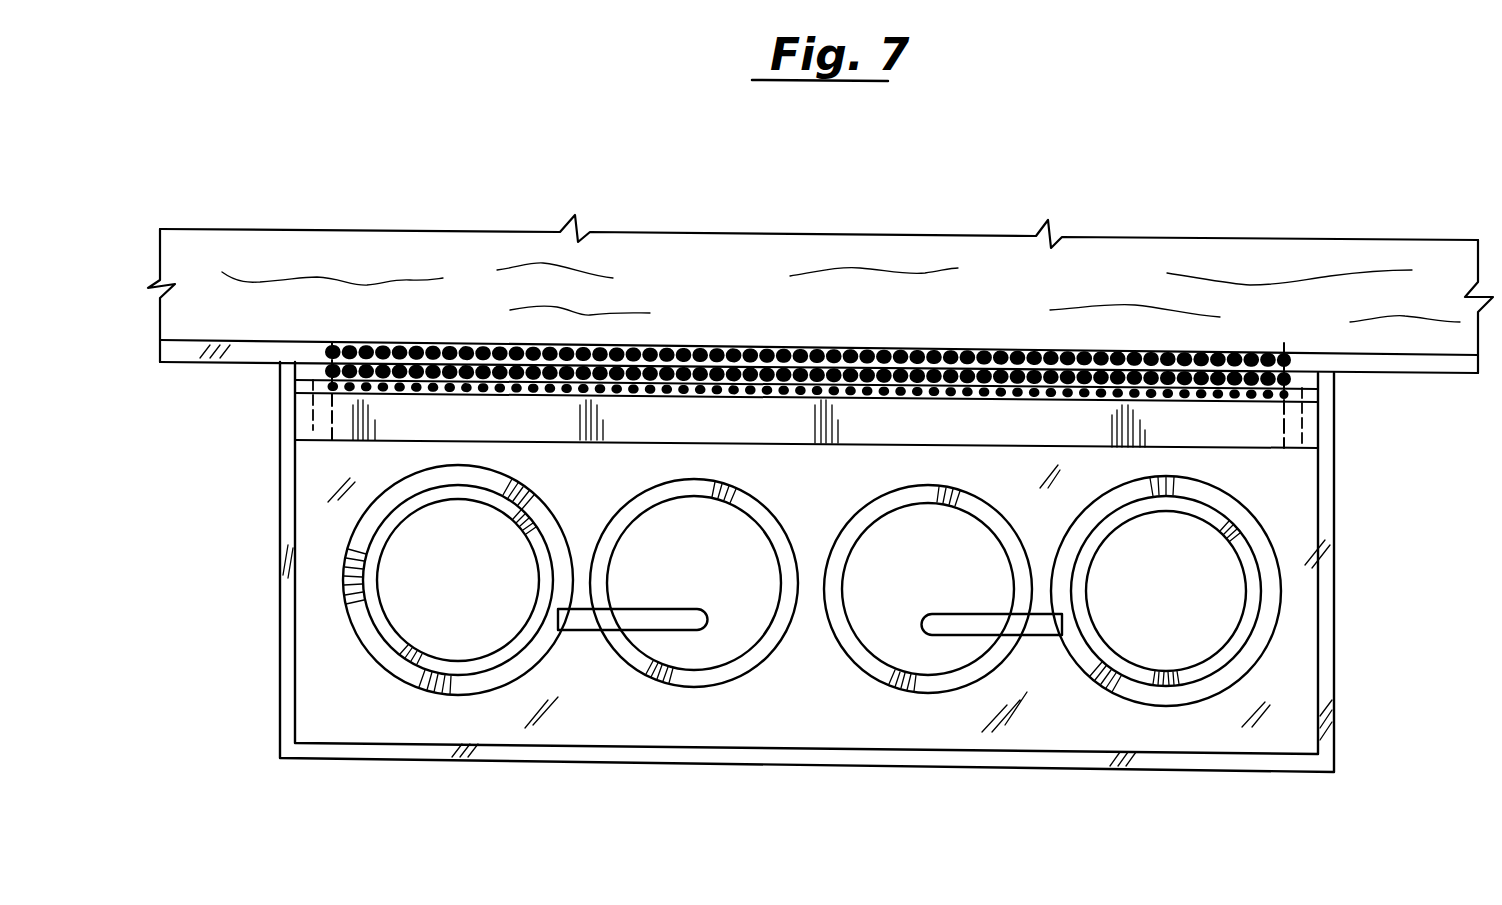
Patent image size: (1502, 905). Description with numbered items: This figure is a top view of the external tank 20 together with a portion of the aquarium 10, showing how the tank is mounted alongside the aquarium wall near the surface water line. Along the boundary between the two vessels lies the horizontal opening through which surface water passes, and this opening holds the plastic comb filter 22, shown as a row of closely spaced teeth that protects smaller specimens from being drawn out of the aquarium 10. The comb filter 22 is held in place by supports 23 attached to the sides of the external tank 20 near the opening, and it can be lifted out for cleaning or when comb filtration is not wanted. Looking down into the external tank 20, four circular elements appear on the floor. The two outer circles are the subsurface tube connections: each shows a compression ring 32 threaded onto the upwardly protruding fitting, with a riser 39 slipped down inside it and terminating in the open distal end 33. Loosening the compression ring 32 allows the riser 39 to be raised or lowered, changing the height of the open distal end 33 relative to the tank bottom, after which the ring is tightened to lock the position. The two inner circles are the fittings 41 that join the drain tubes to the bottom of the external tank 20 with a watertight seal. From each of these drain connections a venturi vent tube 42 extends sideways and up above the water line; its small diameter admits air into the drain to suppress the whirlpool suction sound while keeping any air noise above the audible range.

The aquarium 10 is at (459, 343).
The external tank 20 is at (930, 767).
The comb filter 22 is at (843, 356).
The supports 23 is at (303, 414).
The compression ring 32 is at (388, 660).
The open distal end 33 is at (486, 568).
The riser 39 is at (533, 537).
The fittings 41 is at (873, 508).
The venturi vent tubes 42 is at (963, 628).